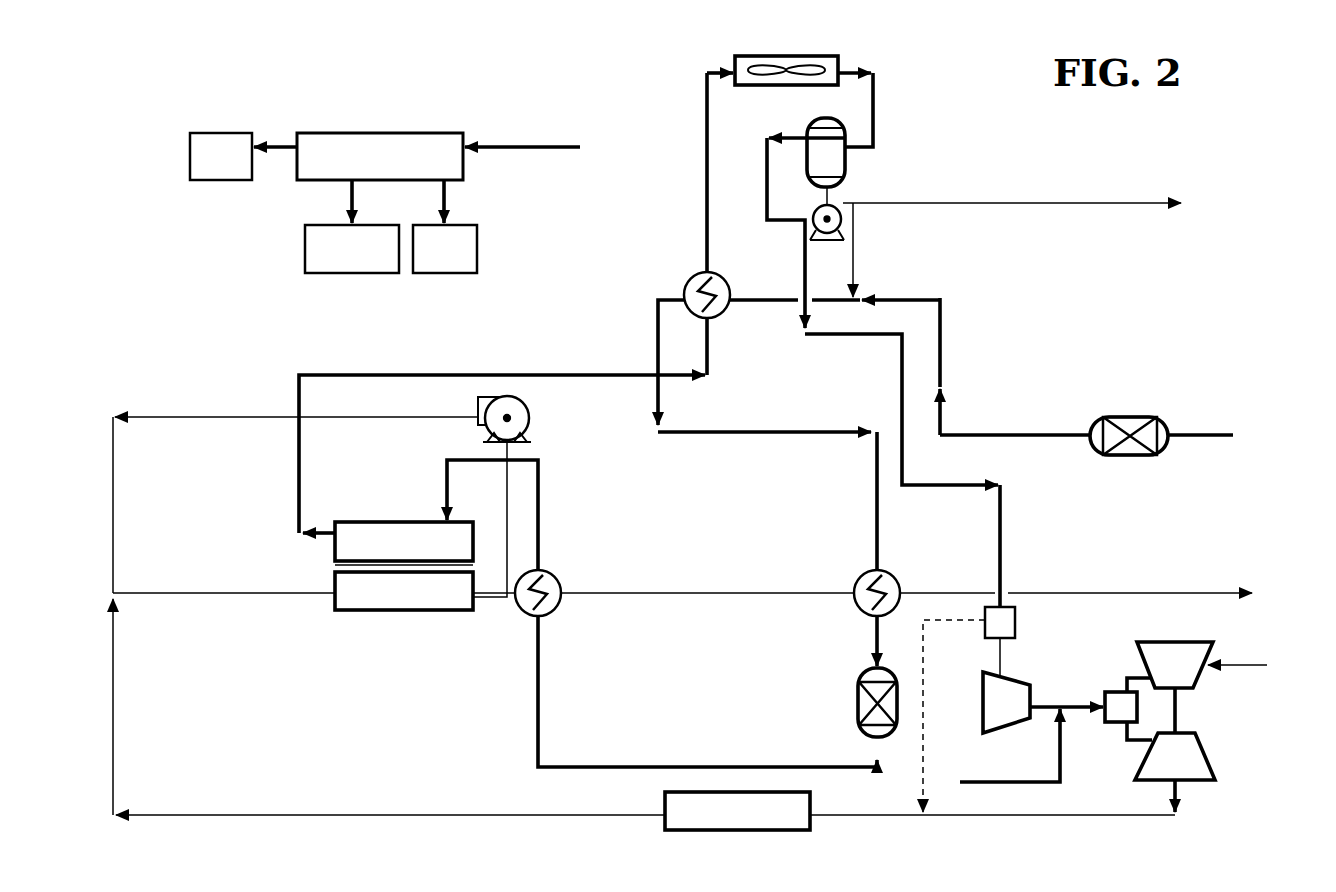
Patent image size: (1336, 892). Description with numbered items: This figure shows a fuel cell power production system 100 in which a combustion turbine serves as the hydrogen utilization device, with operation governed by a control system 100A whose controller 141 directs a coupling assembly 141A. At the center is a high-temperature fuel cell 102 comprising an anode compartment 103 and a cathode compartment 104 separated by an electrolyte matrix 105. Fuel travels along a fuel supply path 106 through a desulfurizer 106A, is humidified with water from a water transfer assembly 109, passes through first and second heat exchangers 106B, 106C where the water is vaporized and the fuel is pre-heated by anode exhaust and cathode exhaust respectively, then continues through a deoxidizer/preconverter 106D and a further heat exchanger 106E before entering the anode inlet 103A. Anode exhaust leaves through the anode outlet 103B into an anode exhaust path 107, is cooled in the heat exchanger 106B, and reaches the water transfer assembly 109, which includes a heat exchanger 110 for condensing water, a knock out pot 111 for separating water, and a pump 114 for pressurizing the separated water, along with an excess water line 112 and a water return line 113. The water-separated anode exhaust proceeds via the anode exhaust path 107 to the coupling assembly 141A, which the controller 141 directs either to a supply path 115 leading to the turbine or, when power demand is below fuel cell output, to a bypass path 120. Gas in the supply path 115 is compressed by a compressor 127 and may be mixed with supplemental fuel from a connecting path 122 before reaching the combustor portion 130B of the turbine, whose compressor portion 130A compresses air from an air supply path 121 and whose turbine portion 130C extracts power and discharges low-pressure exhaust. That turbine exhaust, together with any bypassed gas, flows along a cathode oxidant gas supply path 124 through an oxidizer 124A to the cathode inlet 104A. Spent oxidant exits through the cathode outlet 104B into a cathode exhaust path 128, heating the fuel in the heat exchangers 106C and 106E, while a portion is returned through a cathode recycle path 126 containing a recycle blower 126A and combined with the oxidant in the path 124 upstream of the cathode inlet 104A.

The fuel cell power production system 100 is at (640, 116).
The control system 100A is at (367, 98).
The controller 141 is at (397, 133).
The coupling assembly 141A is at (1015, 620).
The heat exchanger 110 is at (795, 56).
The water transfer assembly 109 is at (1002, 57).
The knock out pot 111 is at (819, 122).
The anode exhaust path 107 is at (767, 170).
The pump 114 is at (835, 207).
The excess water line 112 is at (893, 203).
The water return line 113 is at (855, 262).
The first heat exchanger 106B is at (700, 283).
The fuel supply path 106 is at (990, 435).
The desulfurizer 106A is at (1125, 417).
The second heat exchanger 106C is at (893, 582).
The deoxidizer/preconverter 106D is at (858, 690).
The further heat exchanger 106E is at (560, 583).
The recycle blower 126A is at (525, 410).
The cathode recycle path 126 is at (118, 520).
The cathode exhaust path 128 is at (775, 593).
The high-temperature fuel cell 102 is at (386, 551).
The anode compartment 103 is at (425, 522).
The anode inlet 103A is at (447, 497).
The anode outlet 103B is at (335, 522).
The electrolyte matrix 105 is at (343, 568).
The cathode compartment 104 is at (388, 610).
The cathode inlet 104A is at (335, 600).
The cathode outlet 104B is at (476, 600).
The cathode oxidant gas supply path 124 is at (172, 597).
The oxidizer 124A is at (812, 805).
The bypass path 120 is at (925, 657).
The supply path 115 is at (1000, 650).
The compressor 127 is at (990, 697).
The compressor portion 130A is at (1155, 657).
The combustor portion 130B is at (1125, 697).
The turbine portion 130C is at (1195, 765).
The air supply path 121 is at (1250, 668).
The connecting path 122 is at (1060, 745).